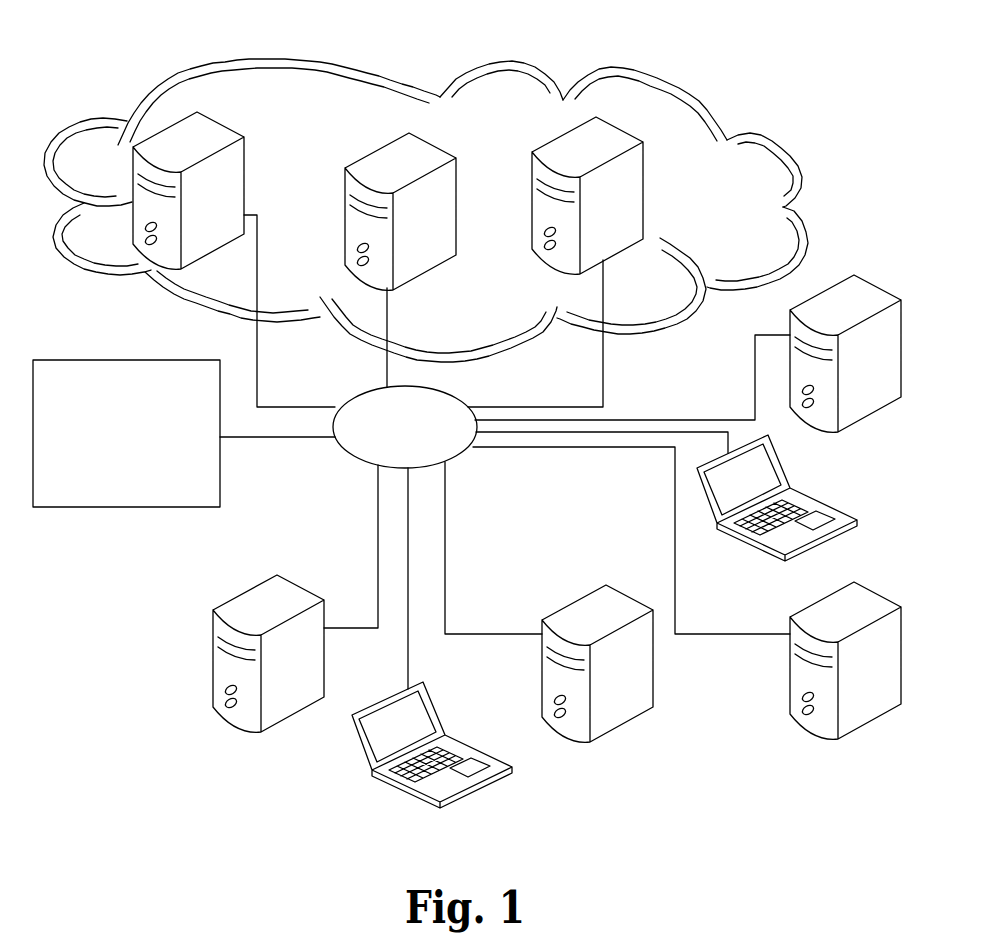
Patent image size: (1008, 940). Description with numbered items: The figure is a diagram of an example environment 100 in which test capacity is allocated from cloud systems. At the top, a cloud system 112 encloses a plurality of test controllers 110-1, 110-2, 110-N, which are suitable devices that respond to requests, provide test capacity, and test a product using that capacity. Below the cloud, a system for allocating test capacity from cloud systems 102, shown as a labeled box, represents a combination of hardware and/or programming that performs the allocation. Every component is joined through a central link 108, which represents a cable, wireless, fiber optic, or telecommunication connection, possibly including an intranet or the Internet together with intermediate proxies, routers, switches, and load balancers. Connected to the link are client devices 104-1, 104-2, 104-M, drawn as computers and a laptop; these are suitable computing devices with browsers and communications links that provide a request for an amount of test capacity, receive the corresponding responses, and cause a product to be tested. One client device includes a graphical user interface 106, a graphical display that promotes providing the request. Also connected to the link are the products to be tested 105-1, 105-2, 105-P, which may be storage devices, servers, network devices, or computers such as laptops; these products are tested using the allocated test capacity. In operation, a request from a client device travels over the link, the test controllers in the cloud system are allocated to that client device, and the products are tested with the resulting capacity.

The environment 100 is at (131, 45).
The system for allocating test capacity from cloud systems 102 is at (45, 360).
The client device 104-1 is at (225, 727).
The client device 104-2 is at (486, 770).
The client device 104-M is at (636, 601).
The product to be tested 105-1 is at (870, 285).
The product to be tested 105-2 is at (776, 470).
The product to be tested 105-P is at (860, 727).
The graphical user interface 106 is at (378, 737).
The link 108 is at (463, 403).
The test controller 110-1 is at (240, 135).
The test controller 110-2 is at (440, 148).
The test controller 110-N is at (624, 131).
The cloud system 112 is at (677, 351).